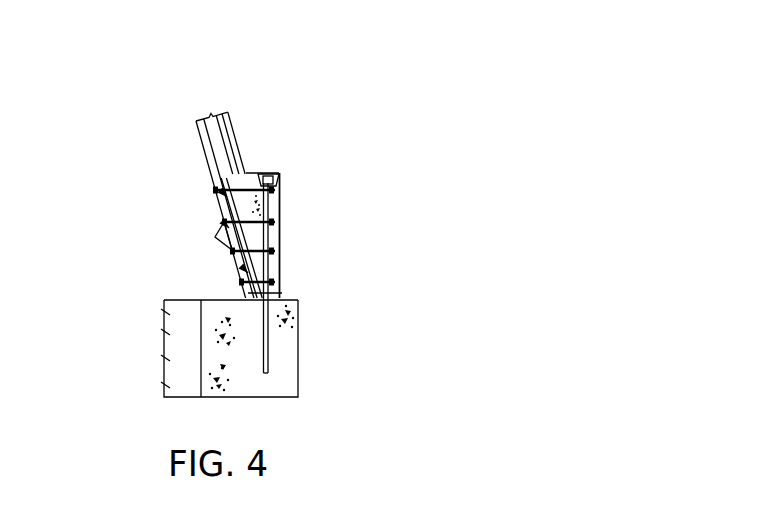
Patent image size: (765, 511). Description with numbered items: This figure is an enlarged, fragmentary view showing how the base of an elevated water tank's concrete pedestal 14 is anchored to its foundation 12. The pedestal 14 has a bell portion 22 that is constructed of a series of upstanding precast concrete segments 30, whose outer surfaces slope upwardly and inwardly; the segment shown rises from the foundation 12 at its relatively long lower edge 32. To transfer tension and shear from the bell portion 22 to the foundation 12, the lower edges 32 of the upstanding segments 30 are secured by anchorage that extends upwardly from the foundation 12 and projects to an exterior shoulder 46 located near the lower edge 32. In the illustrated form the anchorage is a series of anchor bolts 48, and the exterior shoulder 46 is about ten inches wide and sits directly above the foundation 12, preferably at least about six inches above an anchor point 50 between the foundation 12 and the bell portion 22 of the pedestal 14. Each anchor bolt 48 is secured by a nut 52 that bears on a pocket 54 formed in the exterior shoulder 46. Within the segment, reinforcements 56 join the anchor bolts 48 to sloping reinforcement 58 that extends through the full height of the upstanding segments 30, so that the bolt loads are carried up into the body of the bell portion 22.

The foundation 12 is at (291, 348).
The concrete pedestal 14 is at (162, 203).
The bell portion 22 is at (308, 90).
The upstanding precast concrete segments 30 is at (166, 238).
The lower edge 32 is at (292, 298).
The exterior shoulder 46 is at (333, 108).
The anchor bolts 48 is at (336, 278).
The anchor point 50 is at (334, 263).
The nuts 52 is at (339, 136).
The pocket 54 is at (351, 216).
The reinforcements 56 is at (151, 259).
The sloping reinforcement 58 is at (248, 176).